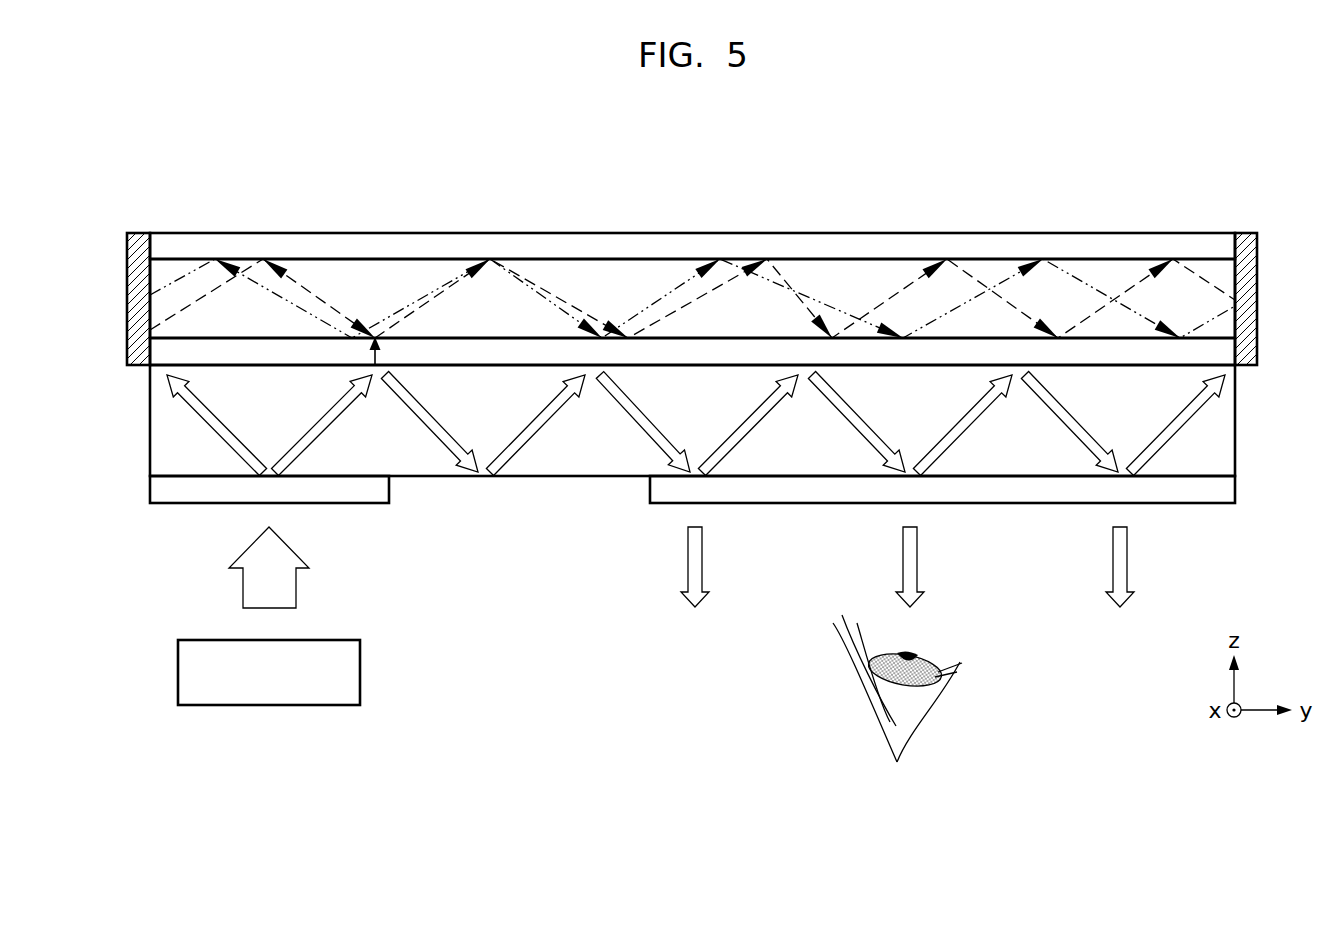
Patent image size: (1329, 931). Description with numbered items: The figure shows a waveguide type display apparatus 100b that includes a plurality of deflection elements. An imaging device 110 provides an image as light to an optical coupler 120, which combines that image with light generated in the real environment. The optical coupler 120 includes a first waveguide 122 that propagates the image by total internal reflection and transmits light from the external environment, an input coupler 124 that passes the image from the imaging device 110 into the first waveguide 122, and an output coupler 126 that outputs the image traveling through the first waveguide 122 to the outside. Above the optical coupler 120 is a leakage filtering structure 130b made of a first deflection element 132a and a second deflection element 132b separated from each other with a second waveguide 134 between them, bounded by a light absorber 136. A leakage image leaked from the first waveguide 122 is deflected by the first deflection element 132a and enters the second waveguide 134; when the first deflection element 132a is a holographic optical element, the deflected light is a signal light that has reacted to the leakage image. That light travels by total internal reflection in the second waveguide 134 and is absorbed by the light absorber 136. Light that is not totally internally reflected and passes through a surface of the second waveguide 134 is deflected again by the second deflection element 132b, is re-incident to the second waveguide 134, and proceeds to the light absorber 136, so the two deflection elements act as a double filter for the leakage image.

The display apparatus 100b is at (1273, 80).
The imaging device 110 is at (270, 693).
The optical coupler 120 is at (422, 633).
The first waveguide 122 is at (525, 468).
The input coupler 124 is at (378, 486).
The output coupler 126 is at (660, 488).
The leakage filtering structure 130b is at (869, 152).
The first deflection element 132a is at (897, 353).
The second deflection element 132b is at (1015, 250).
The second waveguide 134 is at (1138, 282).
The light absorber 136 is at (1247, 250).